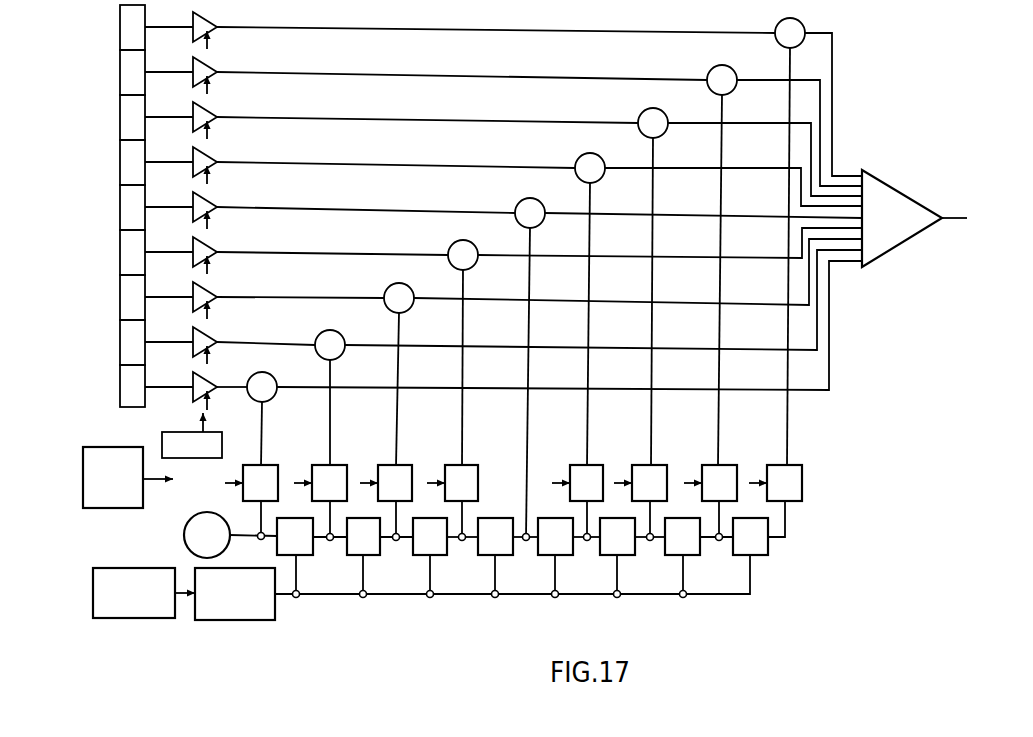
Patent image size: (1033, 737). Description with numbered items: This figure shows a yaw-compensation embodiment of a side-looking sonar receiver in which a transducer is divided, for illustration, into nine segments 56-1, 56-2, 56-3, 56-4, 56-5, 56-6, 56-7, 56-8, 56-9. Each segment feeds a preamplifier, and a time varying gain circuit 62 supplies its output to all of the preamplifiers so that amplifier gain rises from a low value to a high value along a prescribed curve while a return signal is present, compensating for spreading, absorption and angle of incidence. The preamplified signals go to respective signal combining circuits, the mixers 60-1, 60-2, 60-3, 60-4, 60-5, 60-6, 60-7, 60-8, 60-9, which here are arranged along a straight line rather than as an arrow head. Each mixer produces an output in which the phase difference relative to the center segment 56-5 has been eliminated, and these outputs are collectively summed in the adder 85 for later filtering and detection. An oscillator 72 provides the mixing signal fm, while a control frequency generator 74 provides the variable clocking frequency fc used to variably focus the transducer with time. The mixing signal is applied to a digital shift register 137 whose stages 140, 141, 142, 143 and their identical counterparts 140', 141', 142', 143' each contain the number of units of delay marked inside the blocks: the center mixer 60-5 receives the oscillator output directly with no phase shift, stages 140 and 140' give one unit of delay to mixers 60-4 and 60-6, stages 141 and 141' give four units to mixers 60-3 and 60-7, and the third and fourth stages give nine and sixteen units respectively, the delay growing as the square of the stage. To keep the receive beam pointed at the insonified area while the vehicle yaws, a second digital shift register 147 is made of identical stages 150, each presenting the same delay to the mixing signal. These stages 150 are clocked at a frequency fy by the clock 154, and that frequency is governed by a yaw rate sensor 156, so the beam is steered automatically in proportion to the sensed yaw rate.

The transducer segment 56-1 is at (120, 30).
The transducer segment 56-2 is at (120, 75).
The transducer segment 56-3 is at (120, 120).
The transducer segment 56-4 is at (120, 165).
The center transducer segment 56-5 is at (120, 210).
The transducer segment 56-6 is at (120, 255).
The transducer segment 56-7 is at (120, 300).
The transducer segment 56-8 is at (120, 345).
The transducer segment 56-9 is at (120, 390).
The mixer 60-1 is at (800, 24).
The mixer 60-2 is at (732, 71).
The mixer 60-3 is at (663, 114).
The mixer 60-4 is at (600, 159).
The mixer 60-5 is at (540, 204).
The mixer 60-6 is at (473, 246).
The mixer 60-7 is at (409, 289).
The mixer 60-8 is at (340, 336).
The mixer 60-9 is at (272, 378).
The time varying gain circuit 62 is at (181, 432).
The control frequency generator 74 is at (119, 447).
The oscillator 72 is at (184, 535).
The adder 85 is at (905, 197).
The digital shift register 137 is at (810, 487).
The shift register stage 140 is at (594, 470).
The shift register stage 141 is at (657, 470).
The shift register stage 142 is at (727, 470).
The shift register stage 143 is at (795, 470).
The shift register stage 140' is at (471, 468).
The shift register stage 141' is at (405, 468).
The shift register stage 142' is at (339, 468).
The shift register stage 143' is at (270, 468).
The digital shift register 147 is at (800, 540).
The shift register stage 150 is at (351, 556).
The clock 154 is at (236, 568).
The yaw rate sensor 156 is at (107, 568).